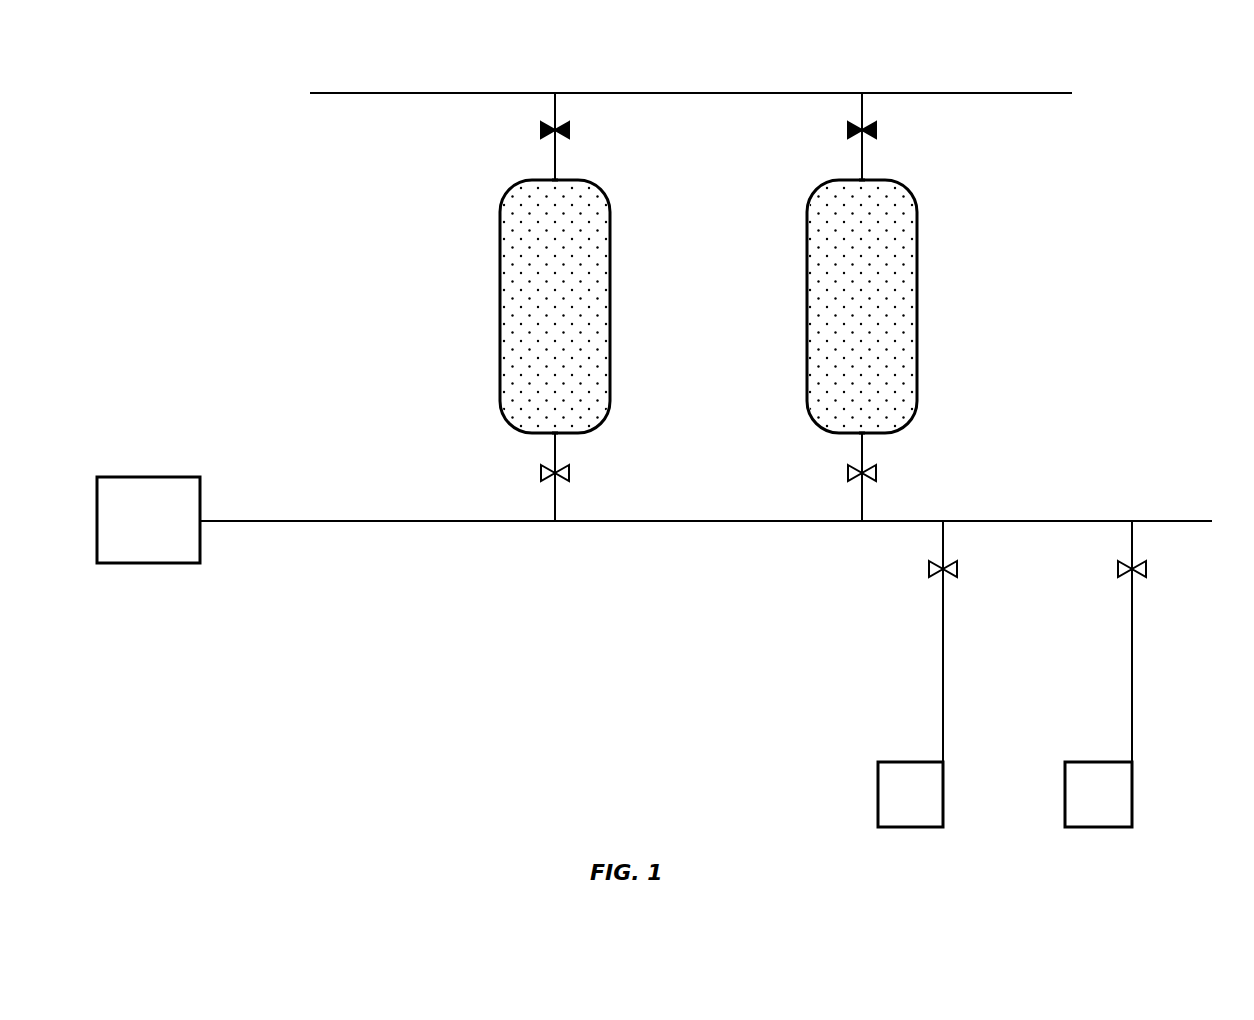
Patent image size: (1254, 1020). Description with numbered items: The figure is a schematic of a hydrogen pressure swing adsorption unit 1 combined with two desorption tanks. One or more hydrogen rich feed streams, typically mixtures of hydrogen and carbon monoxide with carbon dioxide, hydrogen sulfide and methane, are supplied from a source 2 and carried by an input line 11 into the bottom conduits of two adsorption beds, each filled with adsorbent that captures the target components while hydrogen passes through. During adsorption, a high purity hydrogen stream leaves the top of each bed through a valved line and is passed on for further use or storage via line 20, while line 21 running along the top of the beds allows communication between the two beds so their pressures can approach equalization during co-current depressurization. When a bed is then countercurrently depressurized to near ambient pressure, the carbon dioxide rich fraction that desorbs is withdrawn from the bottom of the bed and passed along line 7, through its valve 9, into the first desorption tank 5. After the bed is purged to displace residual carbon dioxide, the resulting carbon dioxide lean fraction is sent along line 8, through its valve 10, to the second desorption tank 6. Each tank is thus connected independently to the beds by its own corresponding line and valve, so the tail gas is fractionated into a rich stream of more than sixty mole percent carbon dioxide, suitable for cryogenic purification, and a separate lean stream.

The hydrogen pressure swing adsorption unit 1 is at (1168, 81).
The source 2 is at (148, 520).
The first desorption tank 5 is at (910, 794).
The second desorption tank 6 is at (1098, 794).
The line 7 is at (932, 641).
The line 8 is at (1120, 641).
The valve 9 is at (954, 576).
The valve 10 is at (1143, 576).
The input line 11 is at (706, 507).
The line 20 is at (505, 79).
The line 21 is at (885, 79).